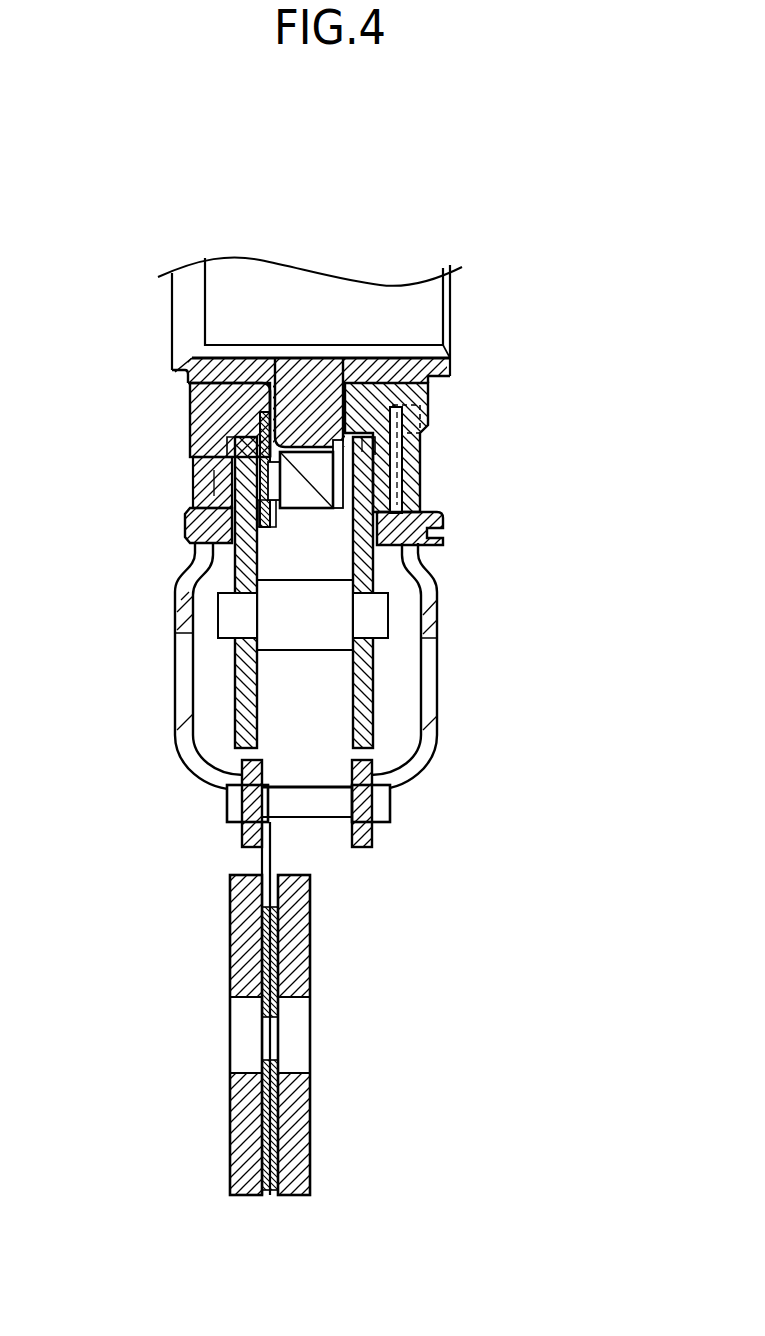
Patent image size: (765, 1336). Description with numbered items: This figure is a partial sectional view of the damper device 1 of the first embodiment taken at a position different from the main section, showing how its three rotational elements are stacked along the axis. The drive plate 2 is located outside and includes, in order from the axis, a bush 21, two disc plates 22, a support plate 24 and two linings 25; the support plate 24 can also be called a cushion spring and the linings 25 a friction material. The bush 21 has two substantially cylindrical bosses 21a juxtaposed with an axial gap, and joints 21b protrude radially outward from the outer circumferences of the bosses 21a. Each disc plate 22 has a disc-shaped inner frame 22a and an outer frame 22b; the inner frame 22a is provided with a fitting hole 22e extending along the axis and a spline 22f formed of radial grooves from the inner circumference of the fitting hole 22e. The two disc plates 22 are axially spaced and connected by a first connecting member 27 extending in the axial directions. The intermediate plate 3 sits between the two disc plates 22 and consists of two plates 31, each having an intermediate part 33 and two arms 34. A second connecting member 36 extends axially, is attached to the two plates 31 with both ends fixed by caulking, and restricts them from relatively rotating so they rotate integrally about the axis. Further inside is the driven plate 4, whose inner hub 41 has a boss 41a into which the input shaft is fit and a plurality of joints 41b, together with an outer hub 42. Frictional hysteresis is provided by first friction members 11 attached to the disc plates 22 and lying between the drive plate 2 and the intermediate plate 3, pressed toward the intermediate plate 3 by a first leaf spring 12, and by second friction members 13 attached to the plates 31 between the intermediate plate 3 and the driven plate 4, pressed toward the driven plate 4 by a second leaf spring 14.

The damper device 1 is at (120, 175).
The drive plate 2 is at (294, 709).
The intermediate plate 3 is at (293, 592).
The driven plate 4 is at (398, 538).
The first friction member 11 is at (185, 521).
The first leaf spring 12 is at (402, 500).
The second friction member 13 is at (270, 468).
The second leaf spring 14 is at (262, 435).
The bush 21 is at (310, 447).
The boss 21a is at (192, 402).
The joint 21b is at (193, 444).
The disc plate 22 is at (200, 750).
The inner frame 22a is at (178, 590).
The outer frame 22b is at (230, 830).
The fitting hole 22e is at (420, 430).
The spline 22f is at (193, 466).
The support plate 24 is at (280, 856).
The lining 25 is at (245, 1138).
The first connecting member 27 is at (328, 812).
The plate 31 is at (242, 800).
The intermediate part 33 is at (362, 447).
The arm 34 is at (235, 672).
The second connecting member 36 is at (330, 628).
The inner hub 41 is at (170, 373).
The boss 41a is at (440, 366).
The joint 41b is at (305, 418).
The outer hub 42 is at (320, 478).